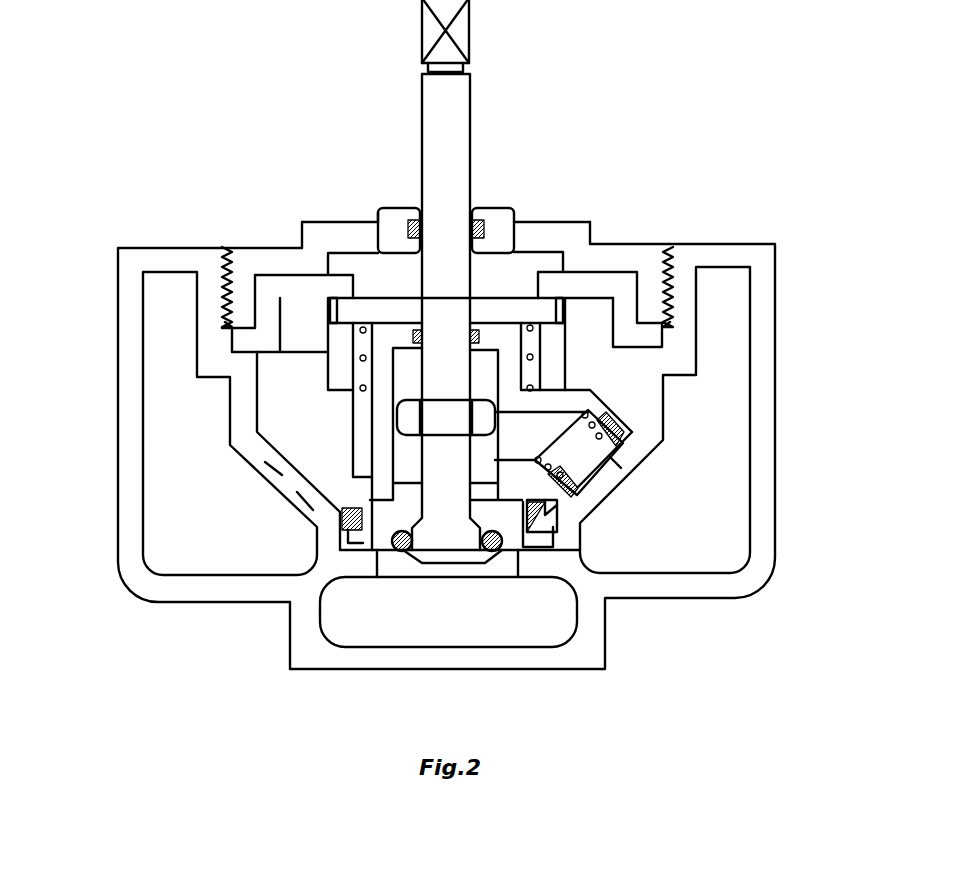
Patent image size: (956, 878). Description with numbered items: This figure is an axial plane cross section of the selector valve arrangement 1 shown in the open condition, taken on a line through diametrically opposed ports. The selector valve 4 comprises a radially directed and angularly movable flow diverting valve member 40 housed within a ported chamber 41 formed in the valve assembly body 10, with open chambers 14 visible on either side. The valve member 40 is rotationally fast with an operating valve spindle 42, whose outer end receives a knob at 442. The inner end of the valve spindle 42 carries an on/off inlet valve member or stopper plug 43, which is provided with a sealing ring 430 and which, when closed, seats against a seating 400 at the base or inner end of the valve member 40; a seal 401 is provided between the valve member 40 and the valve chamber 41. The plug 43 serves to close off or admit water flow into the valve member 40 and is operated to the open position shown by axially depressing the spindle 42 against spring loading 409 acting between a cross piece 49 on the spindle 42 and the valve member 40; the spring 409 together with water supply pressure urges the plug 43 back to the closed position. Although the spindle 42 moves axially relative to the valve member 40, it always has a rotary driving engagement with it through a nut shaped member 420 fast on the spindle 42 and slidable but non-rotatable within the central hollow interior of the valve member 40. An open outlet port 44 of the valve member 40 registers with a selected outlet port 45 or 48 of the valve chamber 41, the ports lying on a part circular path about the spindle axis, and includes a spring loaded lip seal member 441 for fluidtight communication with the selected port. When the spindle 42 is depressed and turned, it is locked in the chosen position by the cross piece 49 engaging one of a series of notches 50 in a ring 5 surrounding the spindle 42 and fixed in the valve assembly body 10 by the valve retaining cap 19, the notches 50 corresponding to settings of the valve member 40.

The valve assembly 1 is at (740, 207).
The selector valve 4 is at (507, 277).
The ring 5 is at (552, 342).
The valve assembly body 10 is at (130, 343).
The chamber 14 is at (170, 433).
The valve retaining cap 19 is at (642, 258).
The flow diverting valve member 40 is at (358, 413).
The ported chamber 41 is at (642, 445).
The operating valve spindle 42 is at (472, 110).
The inlet valve member or stopper plug 43 is at (423, 552).
The outlet port 44 is at (562, 463).
The outlet port 45 is at (610, 473).
The outlet port 48 is at (282, 480).
The cross piece 49 is at (384, 307).
The notches 50 is at (327, 312).
The seating 400 is at (390, 488).
The seal 401 is at (580, 535).
The spring loading 409 is at (530, 390).
The nut shaped member 420 is at (402, 422).
The sealing ring 430 is at (500, 552).
The spring loaded lip seal member 441 is at (580, 485).
The knob receiving end 442 is at (420, 28).